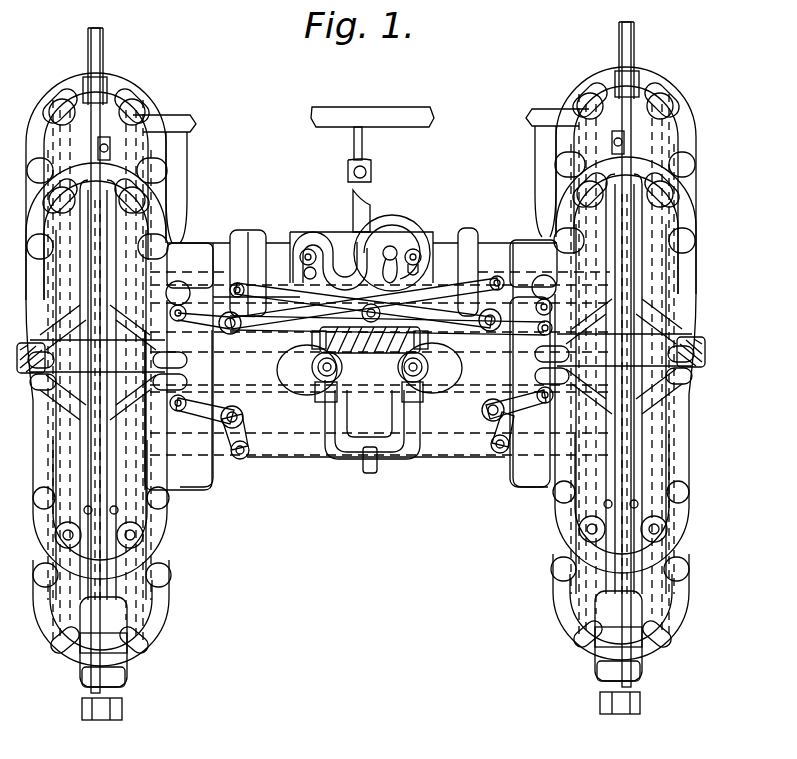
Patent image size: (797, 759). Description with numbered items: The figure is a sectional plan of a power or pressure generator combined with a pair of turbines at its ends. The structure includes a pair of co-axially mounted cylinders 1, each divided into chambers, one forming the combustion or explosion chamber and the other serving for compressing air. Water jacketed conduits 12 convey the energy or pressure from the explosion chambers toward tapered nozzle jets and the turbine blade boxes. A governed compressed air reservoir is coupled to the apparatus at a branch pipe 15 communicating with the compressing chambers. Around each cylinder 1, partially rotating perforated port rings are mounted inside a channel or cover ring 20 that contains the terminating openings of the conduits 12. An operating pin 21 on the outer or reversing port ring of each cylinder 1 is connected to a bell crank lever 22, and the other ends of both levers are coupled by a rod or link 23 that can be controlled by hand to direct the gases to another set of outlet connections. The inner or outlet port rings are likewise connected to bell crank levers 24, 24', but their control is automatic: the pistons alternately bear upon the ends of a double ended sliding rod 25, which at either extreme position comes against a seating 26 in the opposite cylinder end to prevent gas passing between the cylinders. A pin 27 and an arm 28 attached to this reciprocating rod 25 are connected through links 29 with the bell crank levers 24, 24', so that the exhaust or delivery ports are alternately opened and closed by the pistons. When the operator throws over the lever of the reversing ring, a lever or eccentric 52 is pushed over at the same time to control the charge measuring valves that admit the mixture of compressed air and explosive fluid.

The cylinder 1 is at (280, 455).
The conduit 12 is at (165, 618).
The branch pipe 15 is at (372, 473).
The channel or cover ring 20 is at (214, 490).
The operating pin 21 is at (205, 396).
The bell crank lever 22 is at (226, 412).
The rod or link 23 is at (441, 452).
The bell crank lever 24 is at (443, 257).
The pivot link 24' is at (365, 328).
The double ended sliding rod 25 is at (395, 352).
The seating 26 is at (335, 280).
The pin 27 is at (452, 292).
The arm 28 is at (395, 305).
The link 29 is at (248, 285).
The lever or eccentric 52 is at (386, 228).